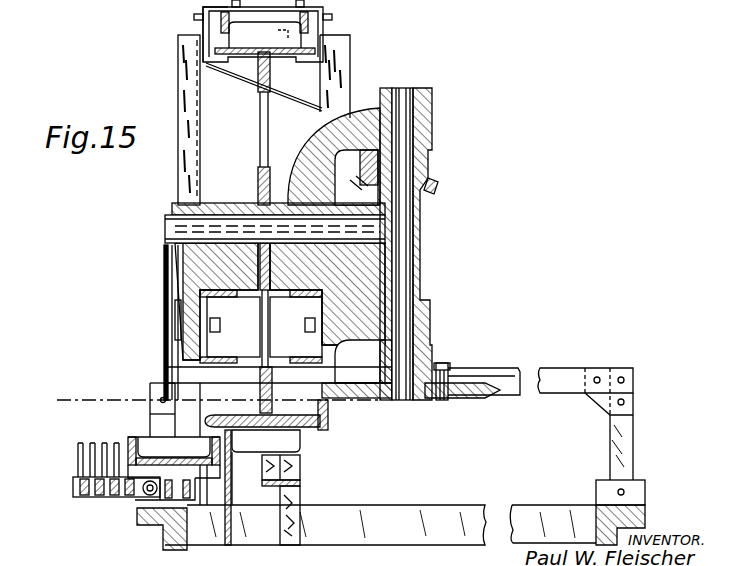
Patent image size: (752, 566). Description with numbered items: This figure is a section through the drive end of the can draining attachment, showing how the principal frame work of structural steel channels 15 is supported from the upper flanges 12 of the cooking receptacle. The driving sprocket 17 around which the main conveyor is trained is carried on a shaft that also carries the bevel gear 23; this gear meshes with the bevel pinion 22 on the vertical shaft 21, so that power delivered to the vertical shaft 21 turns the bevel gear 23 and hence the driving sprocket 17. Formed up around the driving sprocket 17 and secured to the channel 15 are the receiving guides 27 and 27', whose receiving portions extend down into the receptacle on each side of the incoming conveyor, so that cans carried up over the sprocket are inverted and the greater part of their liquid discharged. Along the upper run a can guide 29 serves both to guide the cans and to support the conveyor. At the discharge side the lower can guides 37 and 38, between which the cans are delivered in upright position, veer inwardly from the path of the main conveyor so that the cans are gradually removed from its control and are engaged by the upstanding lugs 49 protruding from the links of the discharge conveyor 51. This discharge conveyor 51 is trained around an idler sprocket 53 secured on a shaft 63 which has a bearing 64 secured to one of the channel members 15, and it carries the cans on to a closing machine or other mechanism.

The upper flanges 12 is at (57, 400).
The structural steel channels 15 is at (320, 310).
The driving sprocket 17 is at (258, 92).
The vertical shaft 21 is at (400, 241).
The bevel pinion 22 is at (436, 186).
The bevel gear 23 is at (367, 186).
The receiving guide 27 is at (293, 31).
The receiving guide 27' is at (178, 34).
The can guide 29 is at (166, 233).
The lower can guide 37 is at (316, 422).
The lower can guide 38 is at (262, 487).
The upstanding lugs 49 is at (78, 462).
The discharge conveyor 51 is at (75, 482).
The idler sprocket 53 is at (142, 490).
The shaft 63 is at (158, 433).
The bearing 64 is at (167, 335).